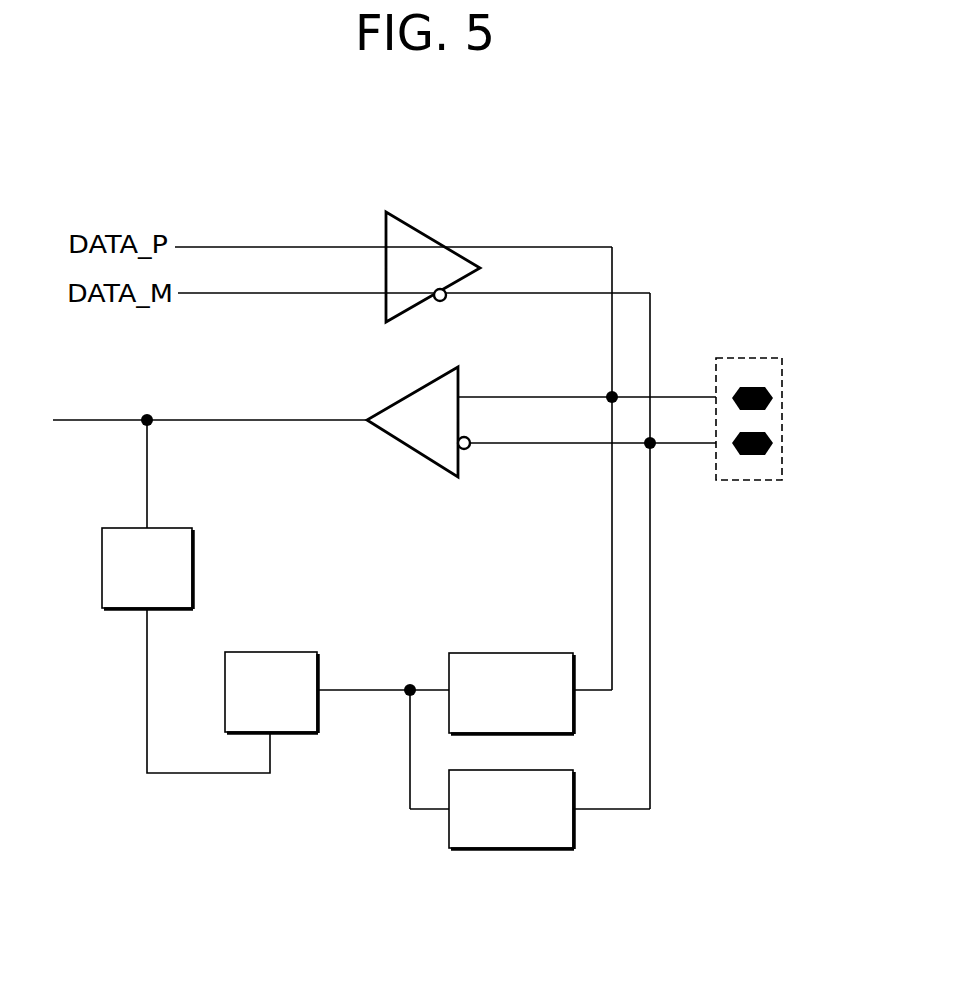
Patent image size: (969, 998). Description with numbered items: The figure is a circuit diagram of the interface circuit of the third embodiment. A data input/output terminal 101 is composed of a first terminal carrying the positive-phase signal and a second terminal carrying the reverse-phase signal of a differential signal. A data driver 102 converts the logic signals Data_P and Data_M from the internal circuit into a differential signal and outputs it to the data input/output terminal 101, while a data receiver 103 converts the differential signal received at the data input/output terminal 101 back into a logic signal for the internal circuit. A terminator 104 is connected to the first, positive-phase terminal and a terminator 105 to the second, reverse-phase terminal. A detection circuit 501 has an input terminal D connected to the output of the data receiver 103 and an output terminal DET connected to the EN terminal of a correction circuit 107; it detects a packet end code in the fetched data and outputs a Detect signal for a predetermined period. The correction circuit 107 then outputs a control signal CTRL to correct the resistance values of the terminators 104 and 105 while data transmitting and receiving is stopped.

The data input/output terminal 101 is at (760, 356).
The data driver 102 is at (418, 232).
The data receiver 103 is at (412, 448).
The terminator 104 is at (515, 649).
The terminator 105 is at (478, 850).
The correction circuit 107 is at (288, 649).
The detection circuit 501 is at (113, 610).